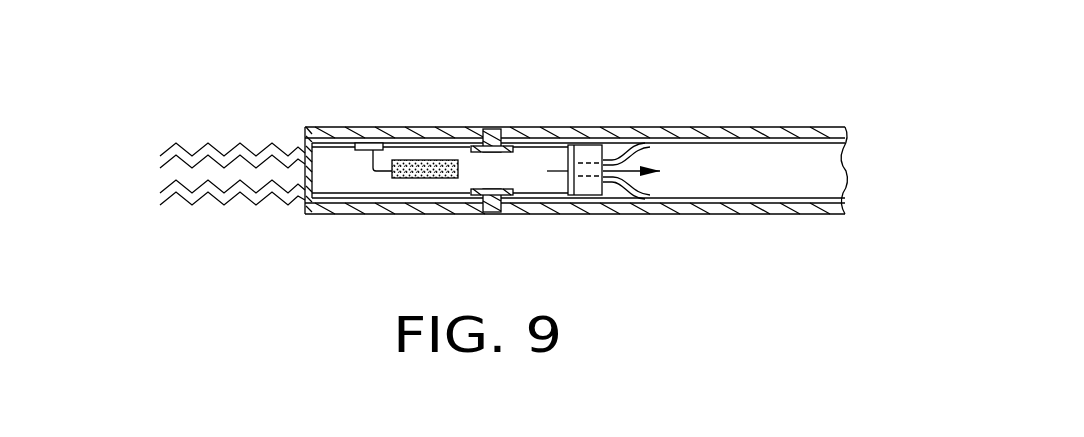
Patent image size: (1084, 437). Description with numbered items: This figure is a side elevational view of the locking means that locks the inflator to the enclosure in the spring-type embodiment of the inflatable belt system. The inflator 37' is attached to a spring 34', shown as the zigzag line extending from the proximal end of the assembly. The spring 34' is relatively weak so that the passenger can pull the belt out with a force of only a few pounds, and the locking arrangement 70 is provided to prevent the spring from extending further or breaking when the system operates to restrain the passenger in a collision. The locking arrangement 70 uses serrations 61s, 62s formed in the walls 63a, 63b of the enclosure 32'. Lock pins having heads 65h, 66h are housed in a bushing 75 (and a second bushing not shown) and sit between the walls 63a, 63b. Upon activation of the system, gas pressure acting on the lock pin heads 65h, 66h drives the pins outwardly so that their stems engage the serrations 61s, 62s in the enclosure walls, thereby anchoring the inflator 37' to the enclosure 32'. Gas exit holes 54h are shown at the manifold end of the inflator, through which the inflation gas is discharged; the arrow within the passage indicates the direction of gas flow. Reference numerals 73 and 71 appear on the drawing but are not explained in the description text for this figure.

The enclosure 32' is at (255, 207).
The spring 34' is at (232, 128).
The inflator 37' is at (436, 140).
The lock pin head 65h is at (438, 142).
The bushing 75 is at (490, 130).
The serrations 61s is at (507, 130).
The locking arrangement 70 is at (511, 85).
The lock pin head 66h is at (520, 208).
The serrations 62s is at (483, 214).
The distal hub 73 is at (664, 135).
The gas exit holes 54h is at (585, 178).
The lumen 71 is at (728, 162).
The enclosure wall 63a is at (687, 128).
The enclosure wall 63b is at (766, 208).